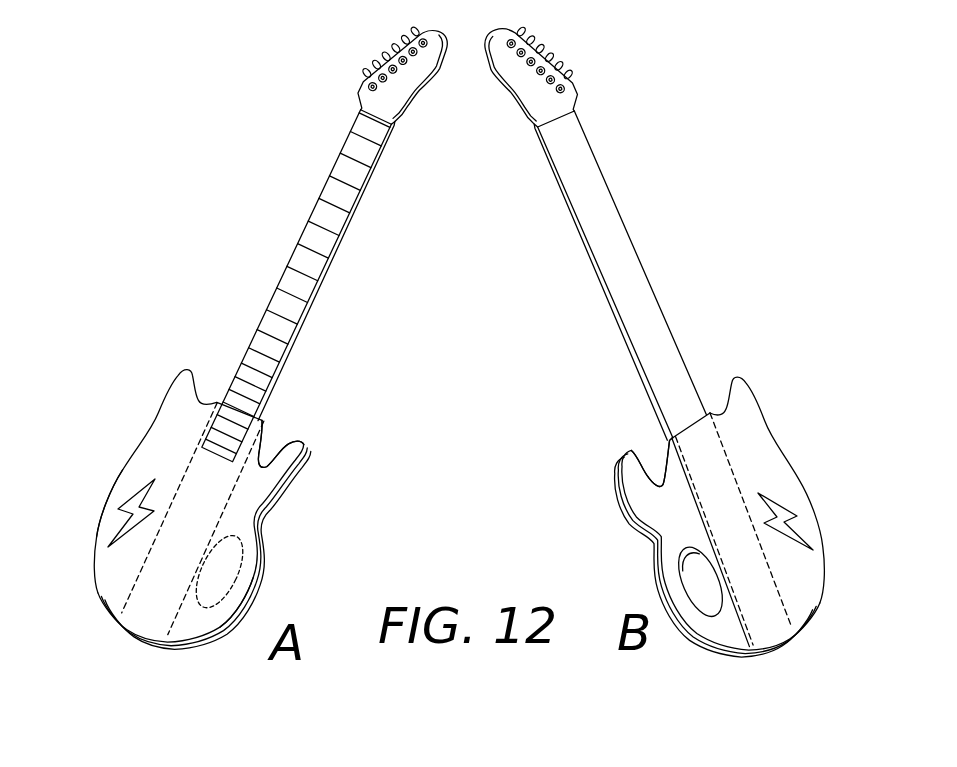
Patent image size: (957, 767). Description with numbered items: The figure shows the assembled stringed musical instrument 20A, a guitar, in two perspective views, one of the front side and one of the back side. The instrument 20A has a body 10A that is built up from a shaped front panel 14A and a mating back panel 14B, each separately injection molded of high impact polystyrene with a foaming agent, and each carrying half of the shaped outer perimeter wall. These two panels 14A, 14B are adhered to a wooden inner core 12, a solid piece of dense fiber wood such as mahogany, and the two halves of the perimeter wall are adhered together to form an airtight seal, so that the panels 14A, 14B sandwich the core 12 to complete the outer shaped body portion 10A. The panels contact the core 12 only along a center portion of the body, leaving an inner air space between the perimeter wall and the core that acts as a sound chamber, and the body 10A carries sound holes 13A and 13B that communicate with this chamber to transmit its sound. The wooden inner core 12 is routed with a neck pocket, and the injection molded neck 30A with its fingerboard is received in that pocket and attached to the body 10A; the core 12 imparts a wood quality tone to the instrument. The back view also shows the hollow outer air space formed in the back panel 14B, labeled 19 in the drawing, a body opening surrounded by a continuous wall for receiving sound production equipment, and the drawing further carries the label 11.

In FIG. 12A, the stringed musical instrument body 10A is at (152, 460).
In FIG. 12B, the stringed musical instrument body 10A is at (772, 470).
In FIG. 12A, the body side edge / section indication 11 is at (98, 497).
In FIG. 12A, the wooden inner core 12 is at (155, 602).
In FIG. 12B, the wooden inner core 12 is at (782, 585).
In FIG. 12A, the sound hole 13A is at (156, 480).
In FIG. 12B, the sound hole 13B is at (802, 520).
In FIG. 12A, the front panel 14A is at (257, 487).
In FIG. 12B, the front panel 14A is at (640, 513).
In FIG. 12A, the back panel 14B is at (280, 513).
In FIG. 12B, the back panel 14B is at (627, 450).
In FIG. 12B, the sound hole 19 is at (693, 590).
In FIG. 12A, the stringed musical instrument 20A is at (206, 257).
In FIG. 12B, the stringed musical instrument 20A is at (748, 247).
In FIG. 12A, the neck 30A is at (307, 224).
In FIG. 12B, the neck 30A is at (623, 233).